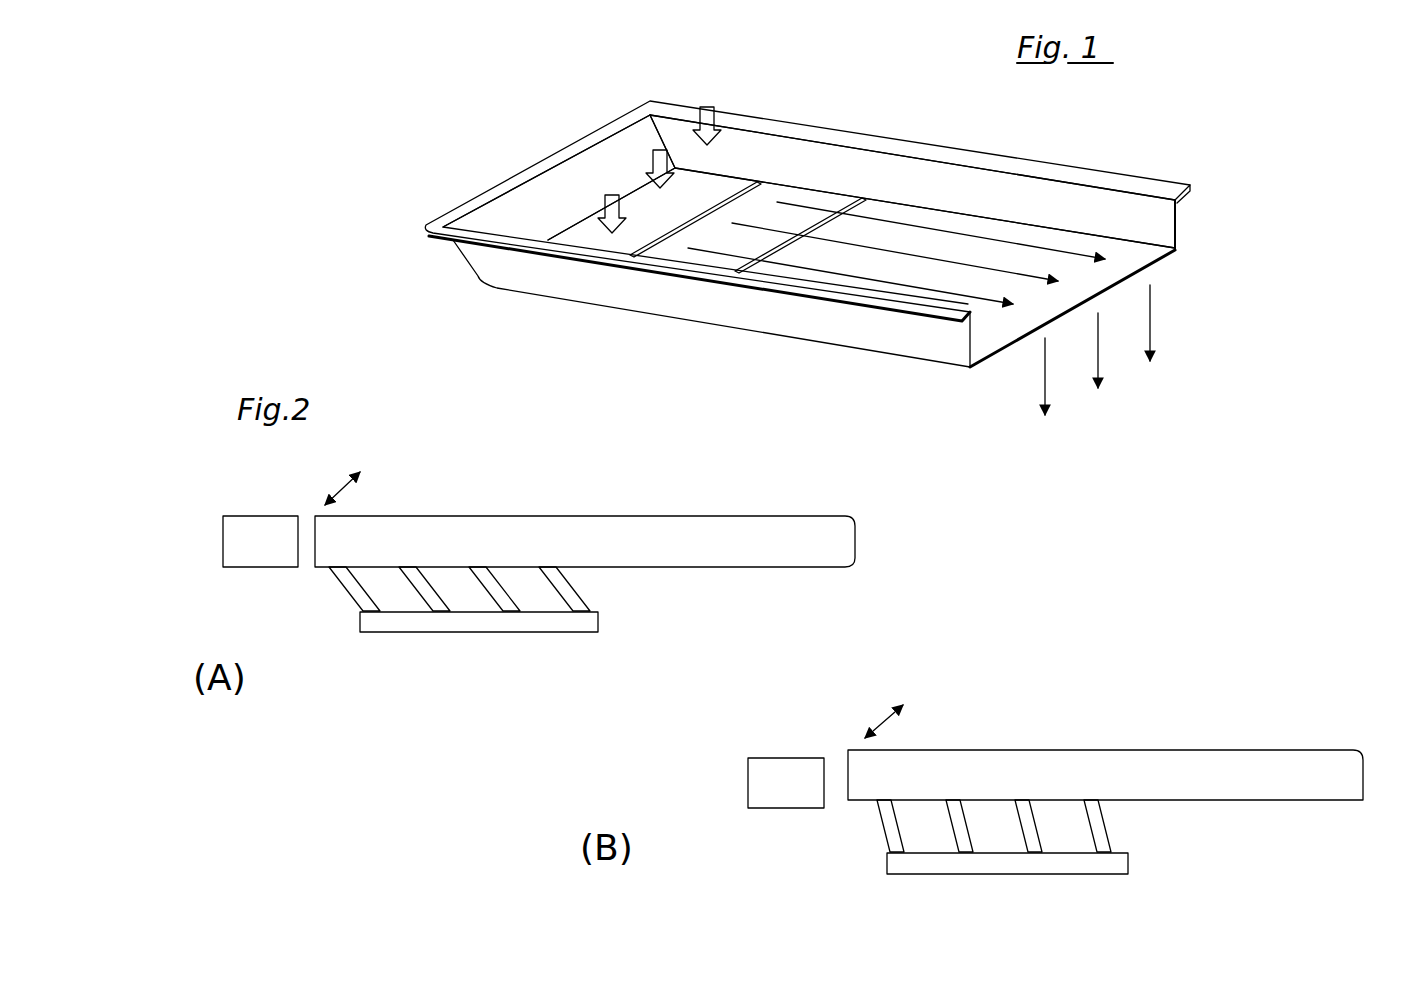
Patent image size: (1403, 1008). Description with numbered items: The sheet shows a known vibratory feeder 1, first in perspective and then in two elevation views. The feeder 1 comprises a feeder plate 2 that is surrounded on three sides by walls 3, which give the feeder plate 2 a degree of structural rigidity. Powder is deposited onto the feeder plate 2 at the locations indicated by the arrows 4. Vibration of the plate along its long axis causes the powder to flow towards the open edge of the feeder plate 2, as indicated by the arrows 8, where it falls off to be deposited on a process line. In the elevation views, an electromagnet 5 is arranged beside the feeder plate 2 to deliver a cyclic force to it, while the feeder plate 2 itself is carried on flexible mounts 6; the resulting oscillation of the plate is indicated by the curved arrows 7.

In FIG. 1, the vibratory feeder 1 is at (440, 100).
In FIG. 2, the vibratory feeder 1 is at (430, 465).
In FIG. 1, the feeder plate 2 is at (1140, 258).
In FIG. 1, the walls 3 is at (518, 202).
In FIG. 2, the walls 3 is at (840, 541).
In FIG. 1, the arrows 4 is at (707, 105).
In FIG. 2, the electromagnet 5 is at (247, 528).
In FIG. 2, the flexible mounts 6 is at (347, 595).
In FIG. 2, the curved arrows 7 is at (335, 467).
In FIG. 1, the arrows 8 is at (1015, 240).